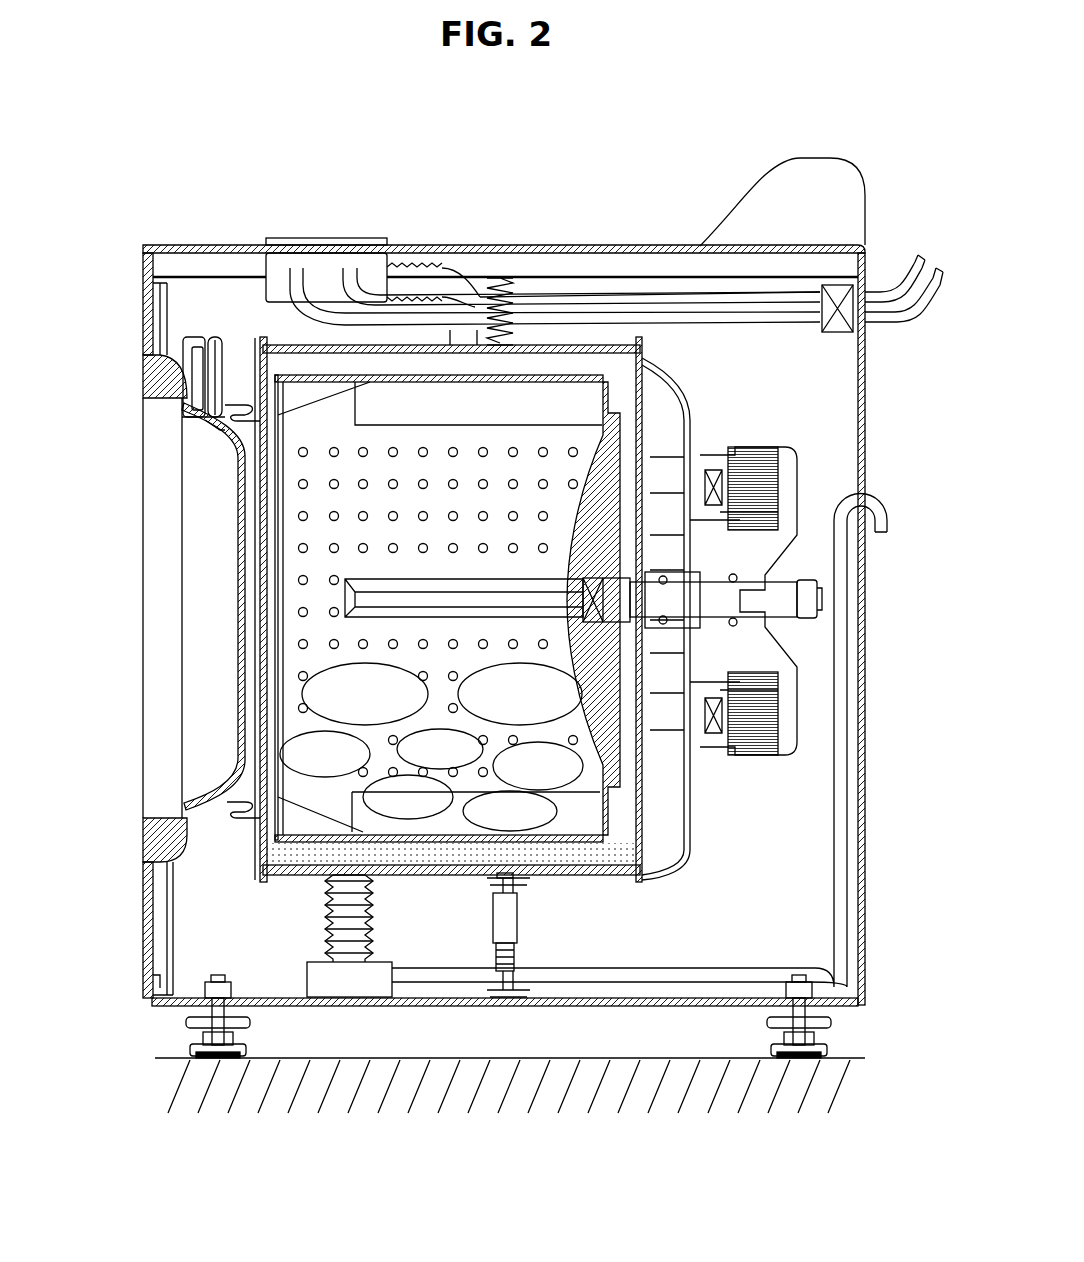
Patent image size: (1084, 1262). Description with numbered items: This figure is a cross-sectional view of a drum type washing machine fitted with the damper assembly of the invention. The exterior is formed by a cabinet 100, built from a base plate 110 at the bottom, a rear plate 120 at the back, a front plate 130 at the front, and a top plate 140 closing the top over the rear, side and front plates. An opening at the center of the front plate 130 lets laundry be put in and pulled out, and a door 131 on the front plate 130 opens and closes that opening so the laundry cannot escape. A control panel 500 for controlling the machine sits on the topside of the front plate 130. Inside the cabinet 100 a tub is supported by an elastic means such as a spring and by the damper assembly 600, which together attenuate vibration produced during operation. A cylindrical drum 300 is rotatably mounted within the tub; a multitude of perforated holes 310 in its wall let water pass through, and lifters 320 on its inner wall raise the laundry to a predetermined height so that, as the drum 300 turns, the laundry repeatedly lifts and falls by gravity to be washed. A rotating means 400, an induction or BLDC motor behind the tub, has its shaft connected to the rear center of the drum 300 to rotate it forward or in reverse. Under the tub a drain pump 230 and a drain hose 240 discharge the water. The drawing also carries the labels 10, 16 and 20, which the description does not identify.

The cabinet 100 is at (140, 277).
The base plate 110 is at (453, 1007).
The rear plate 120 is at (865, 744).
The front plate 130 is at (147, 914).
The door 131 is at (147, 373).
The top plate 140 is at (600, 247).
The detergent supply box 16 is at (322, 262).
The water supply hoses 10 is at (877, 300).
The tub bottom 20 is at (575, 877).
The drain pump 230 is at (352, 997).
The drain hose 240 is at (838, 868).
The drum 300 is at (608, 395).
The perforated holes 310 is at (300, 645).
The lifters 320 is at (535, 400).
The rotating means 400 is at (800, 465).
The control panel 500 is at (750, 198).
The damper assembly 600 is at (488, 921).